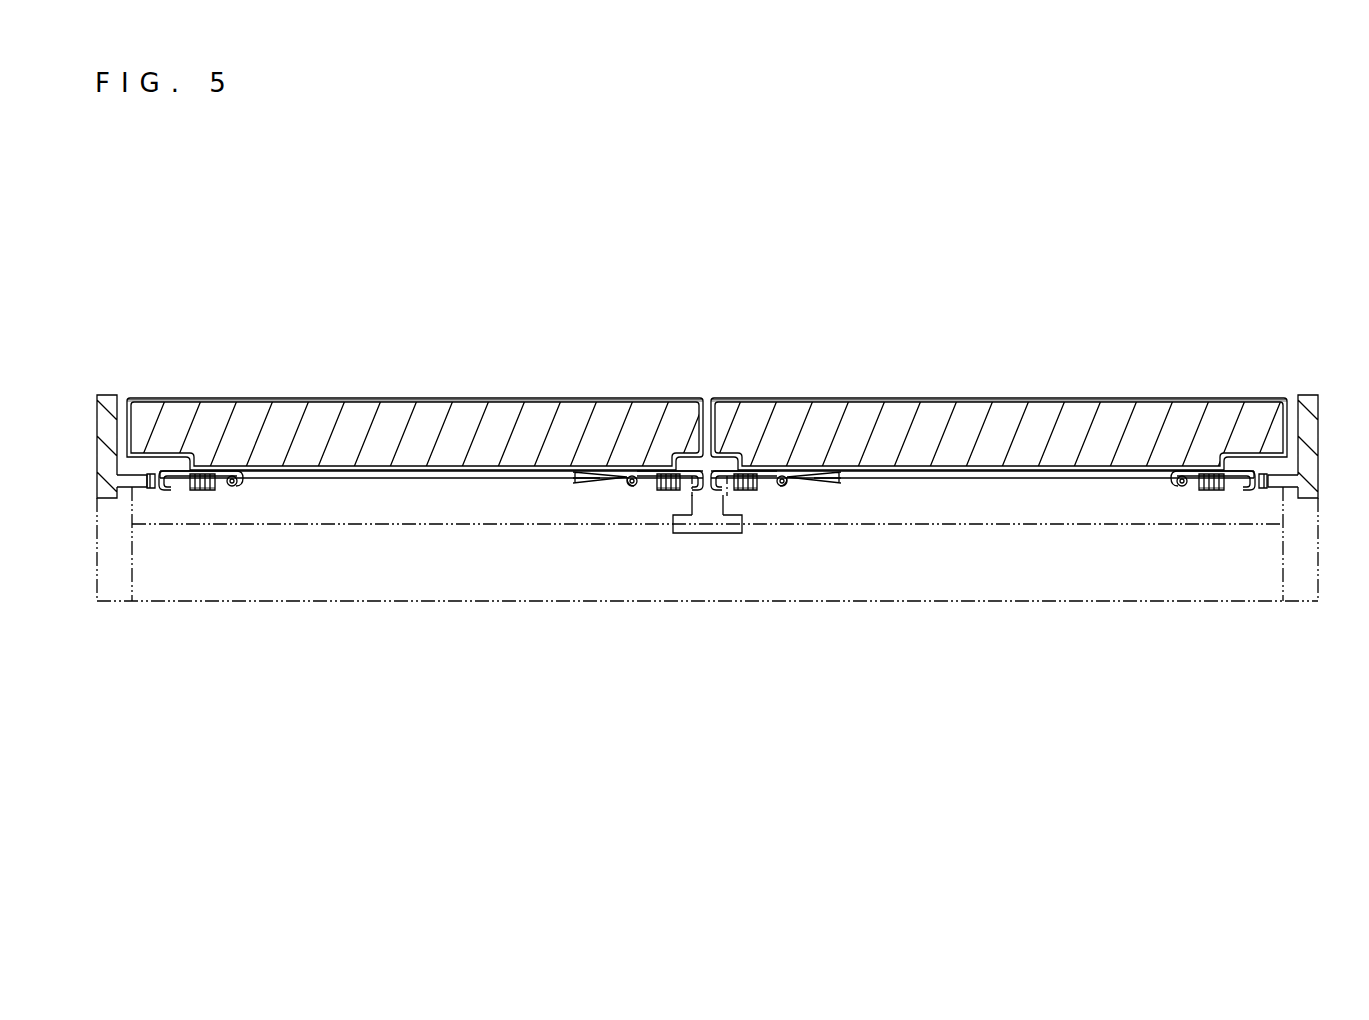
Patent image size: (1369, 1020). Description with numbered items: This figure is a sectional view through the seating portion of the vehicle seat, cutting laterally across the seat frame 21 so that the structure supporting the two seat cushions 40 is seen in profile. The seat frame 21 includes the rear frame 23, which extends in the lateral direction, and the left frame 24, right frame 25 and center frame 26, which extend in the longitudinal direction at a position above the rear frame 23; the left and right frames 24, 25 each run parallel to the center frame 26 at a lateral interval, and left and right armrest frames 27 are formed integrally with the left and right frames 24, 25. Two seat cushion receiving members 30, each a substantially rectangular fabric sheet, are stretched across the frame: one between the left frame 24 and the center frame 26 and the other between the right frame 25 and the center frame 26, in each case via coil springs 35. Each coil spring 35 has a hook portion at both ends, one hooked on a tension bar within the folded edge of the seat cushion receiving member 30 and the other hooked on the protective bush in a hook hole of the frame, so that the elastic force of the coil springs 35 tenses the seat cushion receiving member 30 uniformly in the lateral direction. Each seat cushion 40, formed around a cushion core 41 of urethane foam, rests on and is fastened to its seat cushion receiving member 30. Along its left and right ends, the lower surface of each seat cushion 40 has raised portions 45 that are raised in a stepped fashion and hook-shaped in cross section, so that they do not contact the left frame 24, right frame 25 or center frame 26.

The seat frame 21 is at (501, 629).
The rear frame 23 is at (894, 588).
The left frame 24 is at (1288, 490).
The right frame 25 is at (128, 490).
The center frame 26 is at (709, 525).
The armrest frame 27 is at (108, 402).
The seat cushion receiving member 30 is at (440, 479).
The coil spring 35 is at (216, 488).
The seat cushion 40 is at (362, 397).
The cushion core 41 is at (438, 415).
The raised portion 45 is at (166, 488).